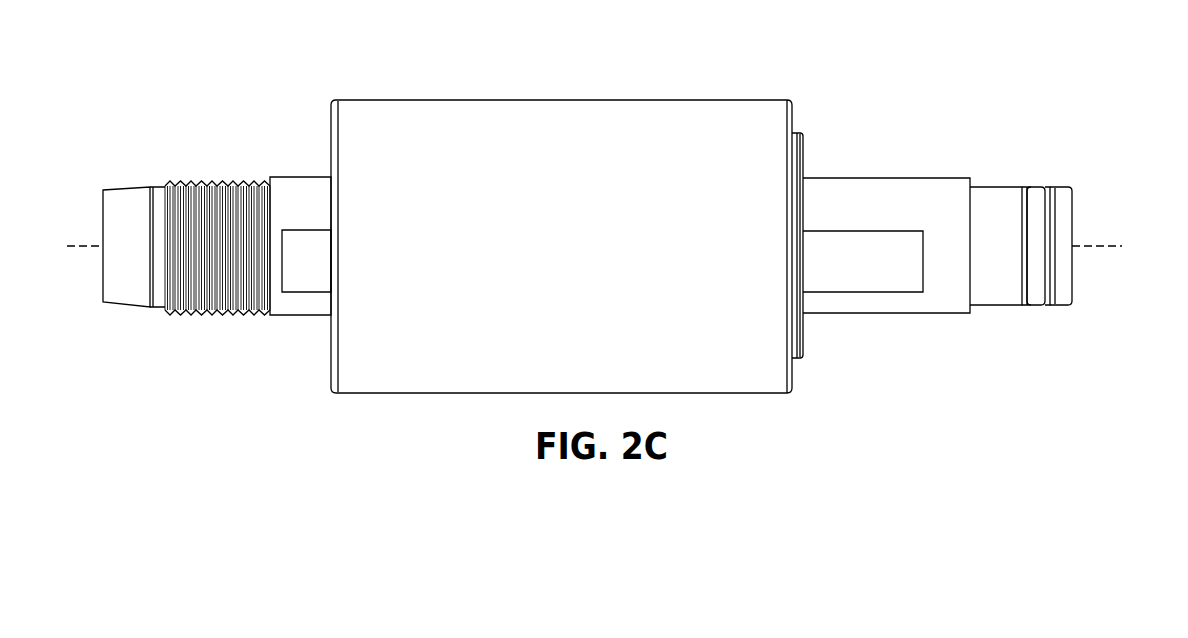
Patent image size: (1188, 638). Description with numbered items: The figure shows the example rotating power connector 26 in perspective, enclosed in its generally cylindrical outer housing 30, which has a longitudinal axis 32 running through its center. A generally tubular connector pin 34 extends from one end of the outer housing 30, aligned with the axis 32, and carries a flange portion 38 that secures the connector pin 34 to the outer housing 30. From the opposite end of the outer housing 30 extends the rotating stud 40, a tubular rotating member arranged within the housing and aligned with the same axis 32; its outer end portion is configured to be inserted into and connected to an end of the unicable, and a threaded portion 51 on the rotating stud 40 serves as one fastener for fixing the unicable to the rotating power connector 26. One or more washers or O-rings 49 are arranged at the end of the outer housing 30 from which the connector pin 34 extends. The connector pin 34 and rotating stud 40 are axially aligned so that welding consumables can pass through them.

The rotating power connector 26 is at (157, 68).
The outer housing 30 is at (770, 100).
The longitudinal axis 32 is at (86, 246).
The connector pin 34 is at (886, 178).
The flange portion 38 is at (803, 335).
The rotating stud 40 is at (300, 177).
The O-rings 49 is at (1040, 185).
The threaded portion 51 is at (222, 312).